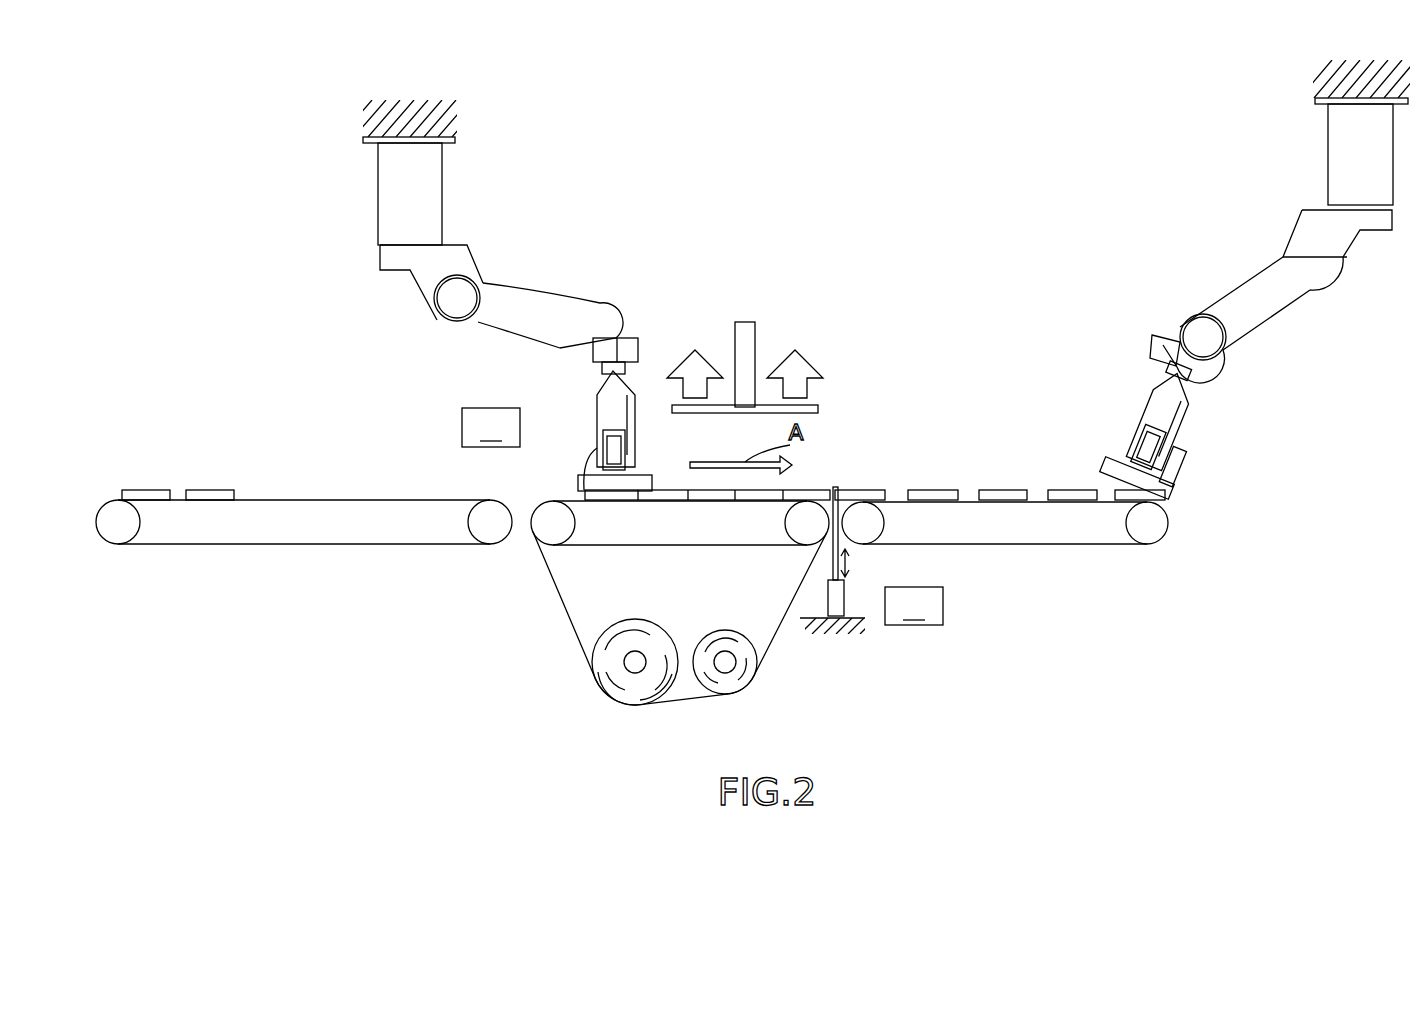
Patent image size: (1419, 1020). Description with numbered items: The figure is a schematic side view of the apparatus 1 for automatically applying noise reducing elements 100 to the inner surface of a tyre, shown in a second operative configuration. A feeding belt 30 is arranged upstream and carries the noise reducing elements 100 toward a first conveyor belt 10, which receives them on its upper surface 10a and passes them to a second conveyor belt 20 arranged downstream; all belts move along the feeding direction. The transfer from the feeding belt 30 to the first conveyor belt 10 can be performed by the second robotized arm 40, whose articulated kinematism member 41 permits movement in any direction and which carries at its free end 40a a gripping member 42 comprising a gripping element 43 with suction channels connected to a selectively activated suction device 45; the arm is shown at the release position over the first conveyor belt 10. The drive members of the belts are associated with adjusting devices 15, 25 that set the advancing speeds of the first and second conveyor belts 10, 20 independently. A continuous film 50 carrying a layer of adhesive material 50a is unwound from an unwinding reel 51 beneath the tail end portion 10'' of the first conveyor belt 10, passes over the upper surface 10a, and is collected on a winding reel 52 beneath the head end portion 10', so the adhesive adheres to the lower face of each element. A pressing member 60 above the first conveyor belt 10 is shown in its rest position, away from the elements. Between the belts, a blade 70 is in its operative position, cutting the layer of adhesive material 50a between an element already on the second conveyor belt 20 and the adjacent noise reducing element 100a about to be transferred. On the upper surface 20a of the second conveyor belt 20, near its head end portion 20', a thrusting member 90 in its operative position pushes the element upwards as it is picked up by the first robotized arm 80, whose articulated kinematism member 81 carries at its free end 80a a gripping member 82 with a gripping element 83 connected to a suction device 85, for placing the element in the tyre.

The apparatus 1 is at (900, 125).
The second robotized arm 40 is at (338, 200).
The articulated kinematism member 41 is at (500, 268).
The free end 40a is at (590, 435).
The gripping member 42 is at (640, 466).
The suction device 45 is at (590, 466).
The gripping element 43 is at (580, 486).
The adjusting device 15 is at (553, 498).
The pressing member 60 is at (768, 340).
The feeding belt 30 is at (278, 520).
The first conveyor belt 10 is at (680, 556).
The upper surface 10a is at (507, 505).
The tail end portion 10'' is at (523, 590).
The head end portion 10' is at (826, 617).
The continuous film 50 is at (560, 600).
The layer of adhesive material 50a is at (572, 605).
The unwinding reel 51 is at (640, 680).
The winding reel 52 is at (722, 680).
The blade 70 is at (845, 485).
The noise reducing element 100a is at (840, 490).
The adjusting device 25 is at (865, 523).
The second conveyor belt 20 is at (1005, 559).
The upper surface 20a is at (968, 493).
The head end portion 20' is at (1173, 589).
The noise reducing elements 100 is at (200, 490).
The first robotized arm 80 is at (1292, 158).
The articulated kinematism member 81 is at (1248, 270).
The free end 80a is at (1198, 422).
The suction device 85 is at (1125, 465).
The gripping member 82 is at (1175, 476).
The thrusting member 90 is at (1185, 492).
The gripping element 83 is at (1158, 505).